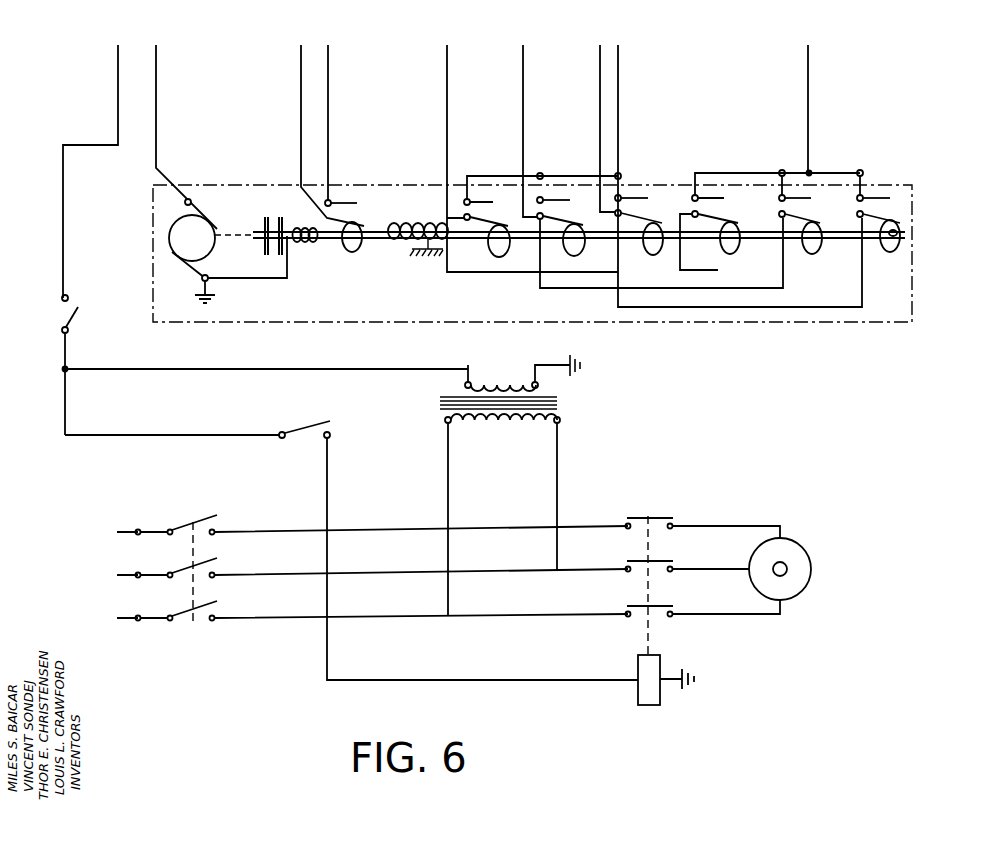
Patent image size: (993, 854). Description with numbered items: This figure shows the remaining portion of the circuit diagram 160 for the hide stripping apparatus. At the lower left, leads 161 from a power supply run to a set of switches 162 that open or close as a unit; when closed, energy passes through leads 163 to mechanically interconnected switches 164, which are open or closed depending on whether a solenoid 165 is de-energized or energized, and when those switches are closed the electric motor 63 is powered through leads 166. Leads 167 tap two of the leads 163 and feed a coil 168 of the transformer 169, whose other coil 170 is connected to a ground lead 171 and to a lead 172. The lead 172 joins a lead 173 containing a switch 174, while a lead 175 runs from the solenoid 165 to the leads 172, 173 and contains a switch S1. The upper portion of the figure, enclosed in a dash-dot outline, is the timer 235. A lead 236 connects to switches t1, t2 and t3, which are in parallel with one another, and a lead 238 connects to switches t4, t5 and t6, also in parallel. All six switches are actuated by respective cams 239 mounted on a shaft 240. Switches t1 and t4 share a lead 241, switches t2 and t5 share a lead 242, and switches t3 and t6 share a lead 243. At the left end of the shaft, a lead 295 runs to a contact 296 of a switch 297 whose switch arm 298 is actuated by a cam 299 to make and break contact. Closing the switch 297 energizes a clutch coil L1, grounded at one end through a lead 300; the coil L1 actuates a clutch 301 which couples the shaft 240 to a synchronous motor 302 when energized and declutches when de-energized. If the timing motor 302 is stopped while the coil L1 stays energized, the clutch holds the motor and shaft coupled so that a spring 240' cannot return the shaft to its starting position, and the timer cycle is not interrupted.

The electric motor 63 is at (812, 568).
The circuit diagram 160 is at (924, 334).
The leads 161 is at (118, 618).
The set of switches 162 is at (206, 510).
The leads 163 is at (250, 616).
The mechanically interconnected switches 164 is at (656, 512).
The solenoid 165 is at (660, 666).
The leads 166 is at (700, 614).
The leads 167 is at (557, 490).
The coil 168 is at (520, 424).
The transformer 169 is at (562, 403).
The coil 170 is at (518, 383).
The ground lead 171 is at (562, 358).
The lead 172 is at (340, 362).
The lead 173 is at (118, 88).
The switch 174 is at (78, 307).
The lead 175 is at (114, 434).
The switch S1 is at (306, 418).
The timer 235 is at (872, 322).
The lead 236 is at (624, 76).
The lead 238 is at (808, 75).
The cams 239 is at (494, 258).
The shaft 240 is at (409, 245).
The spring 240' is at (418, 266).
The lead 241 is at (447, 88).
The lead 242 is at (596, 294).
The lead 243 is at (732, 307).
The lead 295 is at (328, 92).
The contact 296 is at (358, 205).
The switch 297 is at (318, 220).
The switch arm 298 is at (340, 216).
The cam 299 is at (344, 256).
The lead 300 is at (272, 282).
The clutch 301 is at (244, 226).
The synchronous motor 302 is at (210, 255).
The clutch coil L1 is at (308, 248).
The switch t1 is at (500, 215).
The switch t2 is at (575, 214).
The switch t3 is at (656, 212).
The switch t4 is at (733, 212).
The switch t5 is at (812, 212).
The switch t6 is at (889, 210).